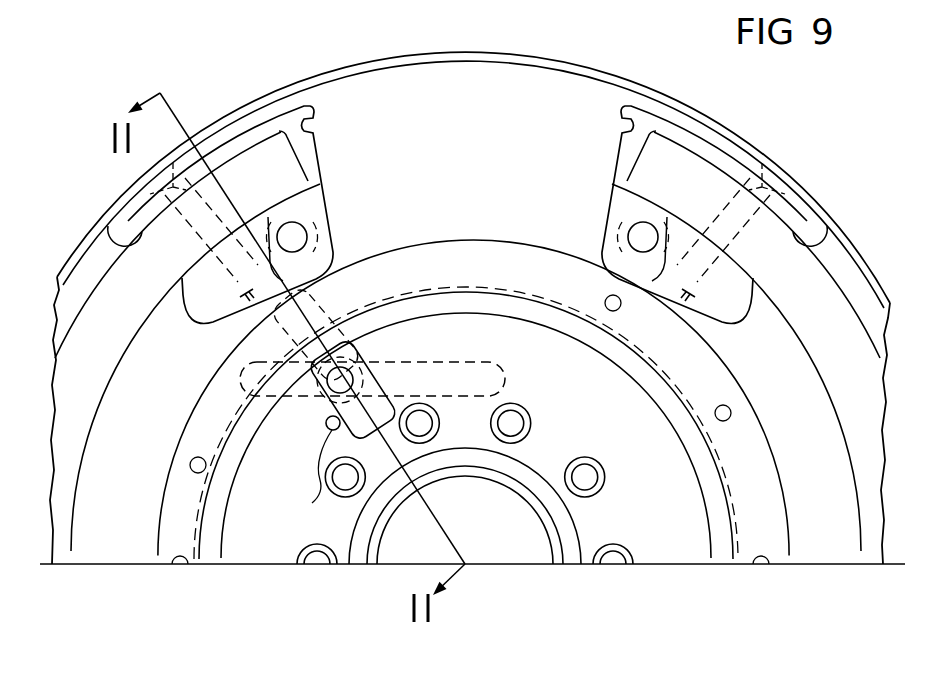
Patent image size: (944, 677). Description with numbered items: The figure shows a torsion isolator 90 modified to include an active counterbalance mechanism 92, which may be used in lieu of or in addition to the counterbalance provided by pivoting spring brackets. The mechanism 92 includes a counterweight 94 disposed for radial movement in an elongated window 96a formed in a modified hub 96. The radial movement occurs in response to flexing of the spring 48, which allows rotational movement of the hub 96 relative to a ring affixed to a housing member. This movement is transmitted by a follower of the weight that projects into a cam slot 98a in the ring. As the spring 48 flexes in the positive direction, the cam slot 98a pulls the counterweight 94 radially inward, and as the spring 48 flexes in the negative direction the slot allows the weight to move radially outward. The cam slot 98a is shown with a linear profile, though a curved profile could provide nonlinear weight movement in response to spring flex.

The torsion isolator 90 is at (643, 80).
The spring 48 is at (810, 365).
The active counterbalance mechanism 92 is at (272, 482).
The counterweight 94 is at (358, 354).
The modified hub 96 is at (657, 506).
The elongated window 96a is at (320, 474).
The cam slot 98a is at (505, 378).